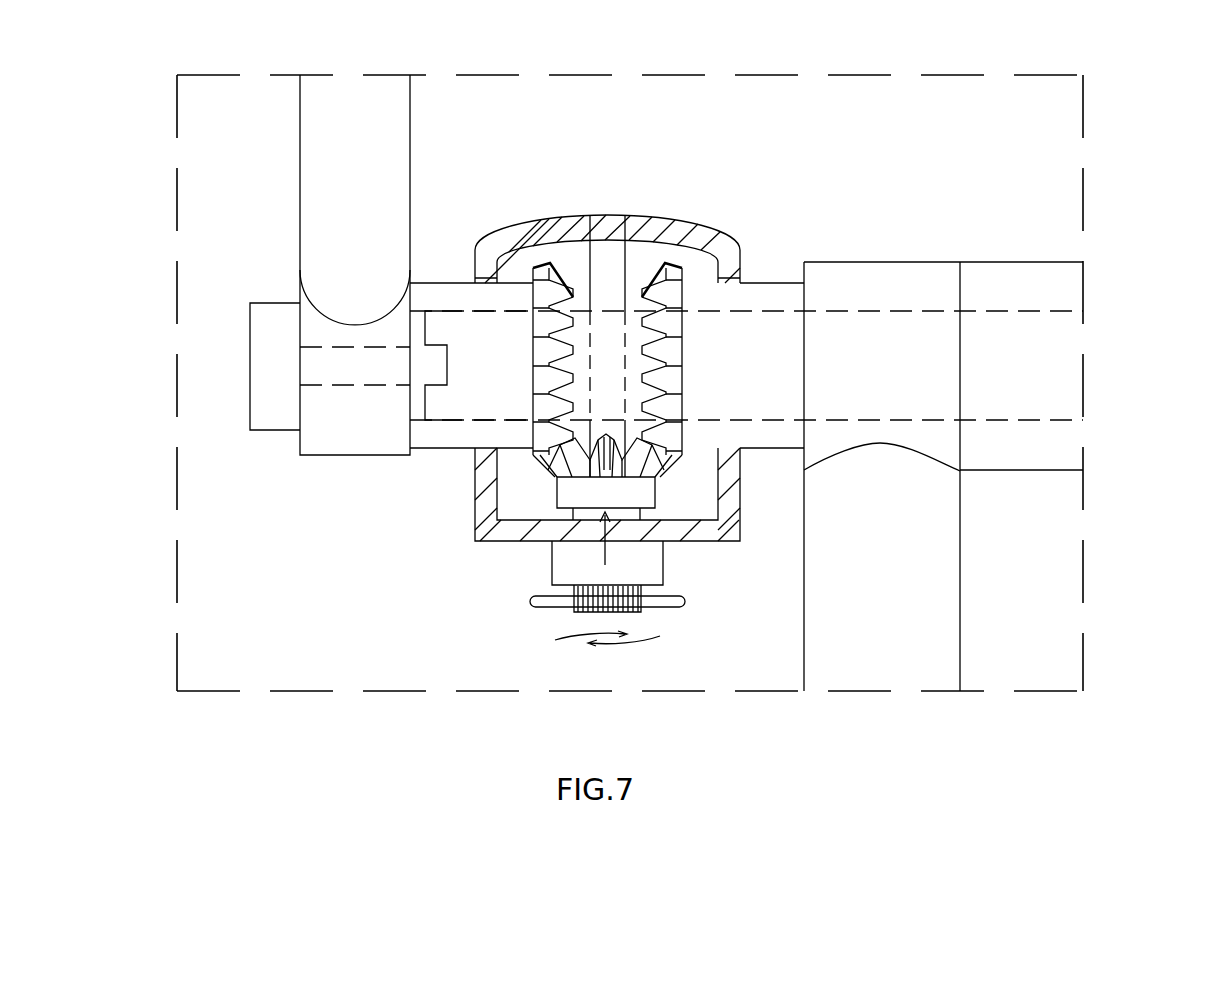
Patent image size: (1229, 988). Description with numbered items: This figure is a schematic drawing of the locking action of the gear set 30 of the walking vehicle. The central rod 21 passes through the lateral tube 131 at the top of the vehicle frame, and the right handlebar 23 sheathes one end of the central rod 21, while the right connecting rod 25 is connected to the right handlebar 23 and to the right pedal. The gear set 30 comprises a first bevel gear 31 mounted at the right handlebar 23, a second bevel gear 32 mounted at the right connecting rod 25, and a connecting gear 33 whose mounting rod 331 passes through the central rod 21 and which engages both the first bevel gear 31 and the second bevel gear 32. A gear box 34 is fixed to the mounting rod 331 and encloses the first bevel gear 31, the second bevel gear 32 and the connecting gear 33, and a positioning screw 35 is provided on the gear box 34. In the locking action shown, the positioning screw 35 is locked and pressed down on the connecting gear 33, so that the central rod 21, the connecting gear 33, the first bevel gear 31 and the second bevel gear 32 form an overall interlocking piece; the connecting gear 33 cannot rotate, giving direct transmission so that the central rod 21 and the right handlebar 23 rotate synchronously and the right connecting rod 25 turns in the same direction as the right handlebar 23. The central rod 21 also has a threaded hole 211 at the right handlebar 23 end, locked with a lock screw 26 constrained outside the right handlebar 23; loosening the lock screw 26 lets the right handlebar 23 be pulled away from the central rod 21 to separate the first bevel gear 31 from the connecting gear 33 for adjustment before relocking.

The central rod 21 is at (888, 312).
The threaded hole 211 is at (442, 395).
The right handlebar 23 is at (397, 133).
The right connecting rod 25 is at (928, 574).
The lock screw 26 is at (275, 312).
The gear set 30 is at (615, 387).
The first bevel gear 31 is at (552, 263).
The second bevel gear 32 is at (652, 275).
The connecting gear 33 is at (572, 465).
The mounting rod 331 is at (657, 468).
The gear box 34 is at (740, 257).
The positioning screw 35 is at (545, 598).
The lateral tube 131 is at (1020, 262).